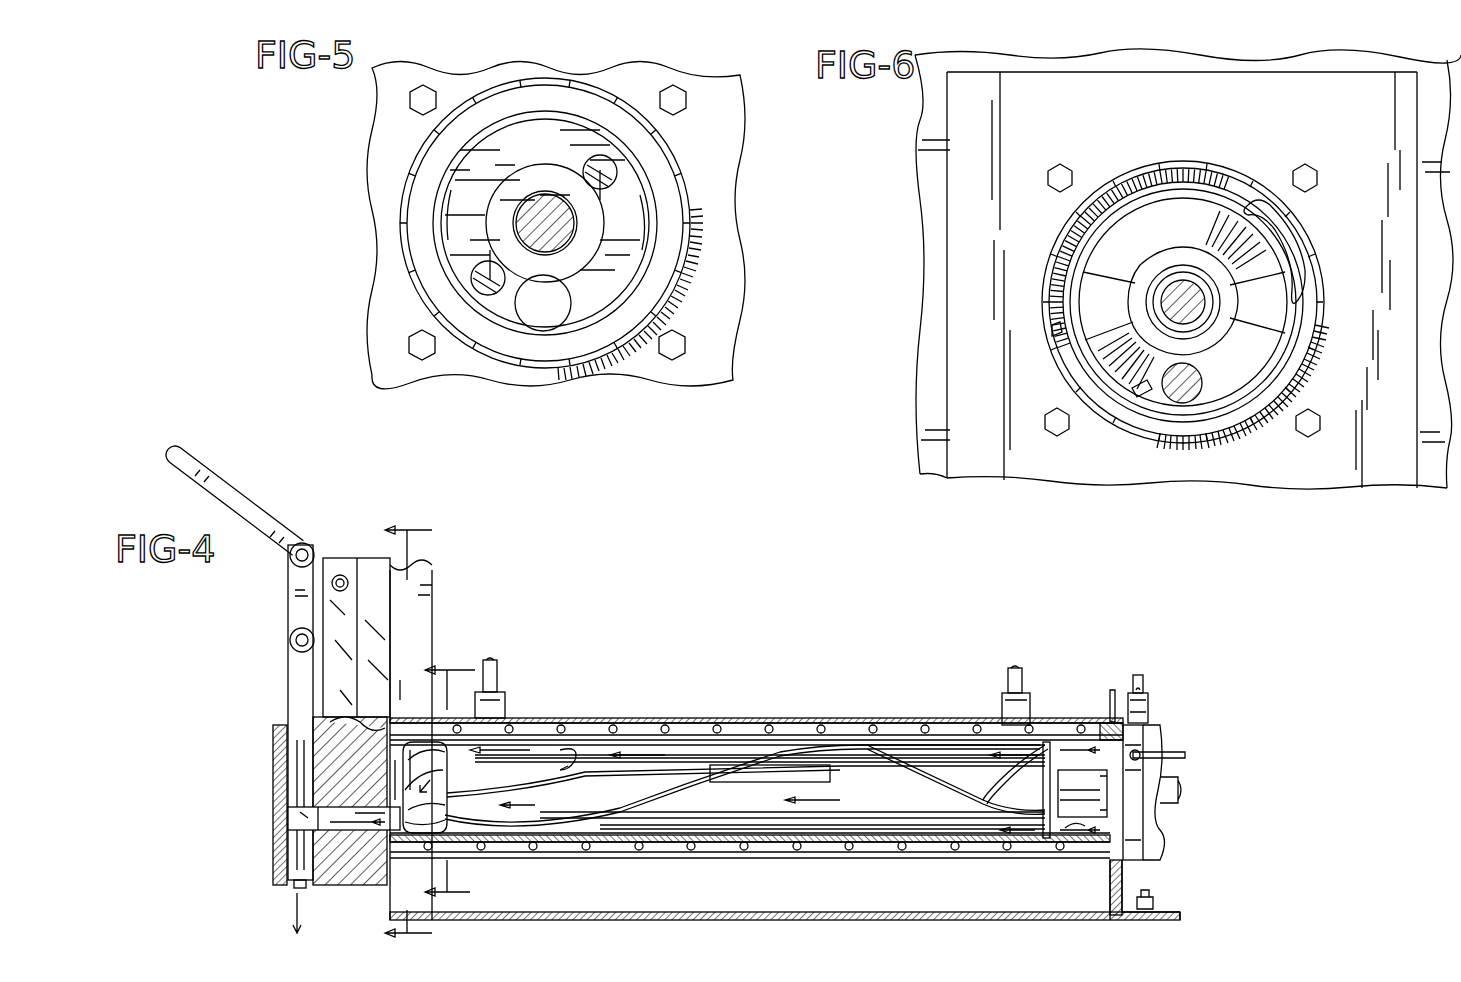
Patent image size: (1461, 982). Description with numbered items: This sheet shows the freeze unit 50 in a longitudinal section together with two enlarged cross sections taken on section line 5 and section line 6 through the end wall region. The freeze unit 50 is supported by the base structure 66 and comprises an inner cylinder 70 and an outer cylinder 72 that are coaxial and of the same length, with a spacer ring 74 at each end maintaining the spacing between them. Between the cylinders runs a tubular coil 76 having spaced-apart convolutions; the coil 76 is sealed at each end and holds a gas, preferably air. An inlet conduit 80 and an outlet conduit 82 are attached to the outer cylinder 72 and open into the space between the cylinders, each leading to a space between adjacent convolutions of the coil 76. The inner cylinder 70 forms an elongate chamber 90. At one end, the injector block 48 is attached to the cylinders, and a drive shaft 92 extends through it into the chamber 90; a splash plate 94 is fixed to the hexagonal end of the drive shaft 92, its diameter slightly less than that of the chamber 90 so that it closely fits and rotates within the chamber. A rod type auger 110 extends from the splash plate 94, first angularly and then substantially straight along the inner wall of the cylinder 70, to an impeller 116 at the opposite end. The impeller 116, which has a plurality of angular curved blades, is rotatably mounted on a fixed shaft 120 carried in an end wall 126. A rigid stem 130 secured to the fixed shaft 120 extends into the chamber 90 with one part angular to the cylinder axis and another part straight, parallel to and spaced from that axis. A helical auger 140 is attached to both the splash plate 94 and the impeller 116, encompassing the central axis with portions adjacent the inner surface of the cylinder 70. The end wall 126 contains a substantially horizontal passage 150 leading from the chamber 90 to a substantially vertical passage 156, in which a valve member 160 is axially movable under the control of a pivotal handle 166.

In FIG. 4, the injector block 48 is at (1140, 820).
In FIG. 4, the freeze unit 50 is at (713, 708).
In FIG. 5, the base structure 66 is at (715, 148).
In FIG. 6, the base structure 66 is at (1000, 478).
In FIG. 4, the base structure 66 is at (403, 690).
In FIG. 4, the inner cylinder 70 is at (578, 730).
In FIG. 4, the outer cylinder 72 is at (772, 716).
In FIG. 5, the spacer ring 74 is at (430, 170).
In FIG. 6, the spacer ring 74 is at (1160, 166).
In FIG. 4, the spacer ring 74 is at (1130, 855).
In FIG. 6, the tubular coil 76 is at (1068, 378).
In FIG. 4, the tubular coil 76 is at (635, 718).
In FIG. 4, the inlet conduit 80 is at (1005, 678).
In FIG. 4, the outlet conduit 82 is at (503, 675).
In FIG. 4, the elongate chamber 90 is at (800, 787).
In FIG. 4, the drive shaft 92 is at (1165, 778).
In FIG. 4, the splash plate 94 is at (1056, 745).
In FIG. 6, the rod type auger 110 is at (1200, 398).
In FIG. 4, the rod type auger 110 is at (1010, 790).
In FIG. 6, the impeller 116 is at (1215, 210).
In FIG. 4, the impeller 116 is at (410, 770).
In FIG. 5, the fixed shaft 120 is at (520, 221).
In FIG. 6, the fixed shaft 120 is at (1168, 298).
In FIG. 5, the end wall 126 is at (640, 228).
In FIG. 6, the end wall 126 is at (915, 345).
In FIG. 4, the end wall 126 is at (320, 745).
In FIG. 4, the rigid stem 130 is at (556, 785).
In FIG. 6, the helical auger 140 is at (1138, 400).
In FIG. 4, the helical auger 140 is at (978, 800).
In FIG. 5, the horizontal passage 150 is at (573, 305).
In FIG. 4, the horizontal passage 150 is at (356, 882).
In FIG. 4, the vertical passage 156 is at (275, 850).
In FIG. 4, the valve member 160 is at (288, 690).
In FIG. 4, the pivotal handle 166 is at (232, 495).
In FIG. 4, the section line 5— 5 is at (393, 736).
In FIG. 4, the section line 6— 6 is at (452, 779).